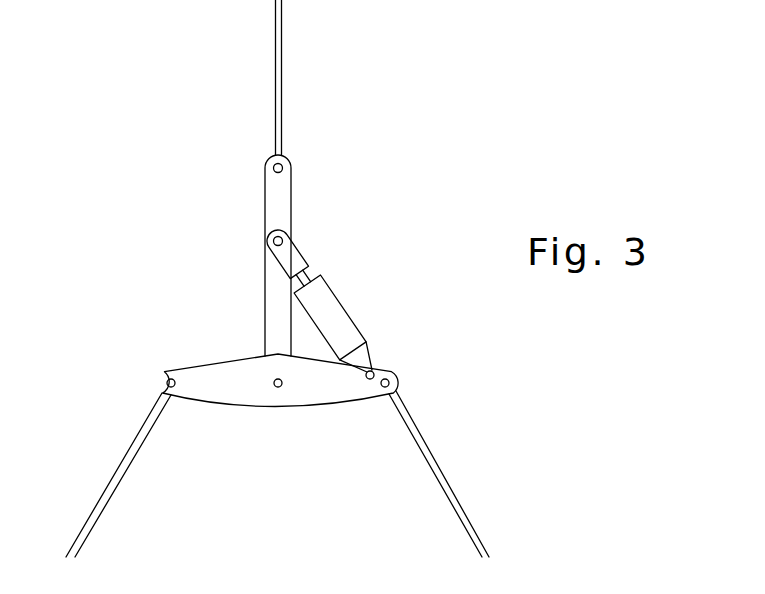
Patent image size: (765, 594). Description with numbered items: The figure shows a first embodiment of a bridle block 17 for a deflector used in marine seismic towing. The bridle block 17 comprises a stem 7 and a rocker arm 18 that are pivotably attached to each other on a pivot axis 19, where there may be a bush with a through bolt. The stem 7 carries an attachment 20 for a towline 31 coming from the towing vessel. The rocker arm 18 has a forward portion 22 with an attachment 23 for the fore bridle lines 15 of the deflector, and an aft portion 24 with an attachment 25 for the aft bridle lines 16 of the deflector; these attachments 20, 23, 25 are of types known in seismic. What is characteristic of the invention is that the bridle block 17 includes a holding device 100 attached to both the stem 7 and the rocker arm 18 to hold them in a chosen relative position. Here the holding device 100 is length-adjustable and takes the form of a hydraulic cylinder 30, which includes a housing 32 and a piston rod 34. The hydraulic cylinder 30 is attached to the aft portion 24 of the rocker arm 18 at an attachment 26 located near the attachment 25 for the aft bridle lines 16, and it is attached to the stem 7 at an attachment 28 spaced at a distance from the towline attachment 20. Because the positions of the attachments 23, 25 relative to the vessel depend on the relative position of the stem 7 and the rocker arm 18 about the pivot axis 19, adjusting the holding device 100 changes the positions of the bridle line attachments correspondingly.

The holding device 100 is at (378, 240).
The towline 31 is at (279, 72).
The stem 7 is at (280, 200).
The attachment 20 is at (272, 167).
The attachment 28 is at (283, 240).
The piston rod 34 is at (311, 267).
The hydraulic cylinder 30 is at (330, 300).
The housing 32 is at (332, 322).
The attachment 26 is at (373, 370).
The rocker arm 18 is at (212, 373).
The attachment 23 is at (168, 378).
The center pivot pin 19 is at (277, 388).
The attachment 25 is at (390, 383).
The fore bridle lines 15 is at (152, 410).
The aft bridle lines 16 is at (407, 419).
The forward portion 22 is at (208, 388).
The aft portion 24 is at (332, 384).
The bridle block 17 is at (208, 297).